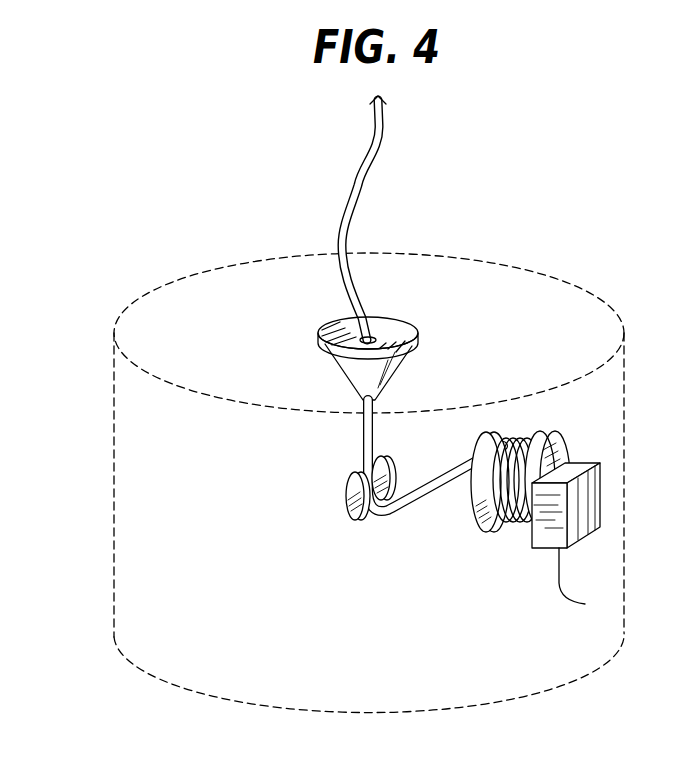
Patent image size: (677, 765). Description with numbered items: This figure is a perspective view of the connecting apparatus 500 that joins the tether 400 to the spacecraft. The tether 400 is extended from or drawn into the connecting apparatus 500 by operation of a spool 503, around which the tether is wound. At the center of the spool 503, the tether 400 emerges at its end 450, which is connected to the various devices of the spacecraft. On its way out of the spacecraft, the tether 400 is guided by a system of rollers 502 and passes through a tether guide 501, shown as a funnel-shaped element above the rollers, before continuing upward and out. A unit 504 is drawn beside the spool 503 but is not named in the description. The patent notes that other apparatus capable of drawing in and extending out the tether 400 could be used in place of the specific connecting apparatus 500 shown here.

The tether 400 is at (363, 178).
The end 450 is at (559, 583).
The connecting apparatus 500 is at (554, 244).
The tether guide 501 is at (420, 340).
The rollers 502 is at (347, 514).
The spool 503 is at (565, 440).
The drive unit 504 is at (590, 492).